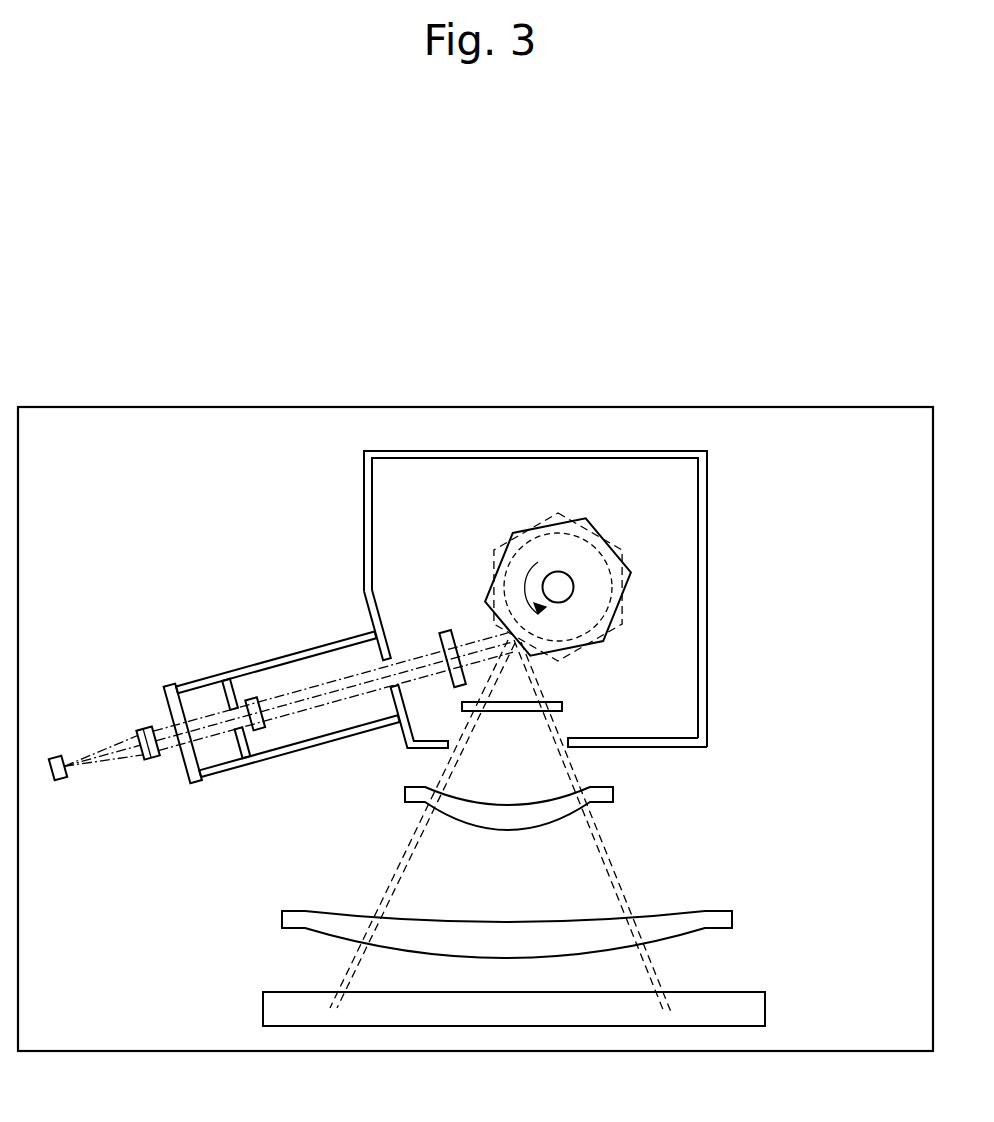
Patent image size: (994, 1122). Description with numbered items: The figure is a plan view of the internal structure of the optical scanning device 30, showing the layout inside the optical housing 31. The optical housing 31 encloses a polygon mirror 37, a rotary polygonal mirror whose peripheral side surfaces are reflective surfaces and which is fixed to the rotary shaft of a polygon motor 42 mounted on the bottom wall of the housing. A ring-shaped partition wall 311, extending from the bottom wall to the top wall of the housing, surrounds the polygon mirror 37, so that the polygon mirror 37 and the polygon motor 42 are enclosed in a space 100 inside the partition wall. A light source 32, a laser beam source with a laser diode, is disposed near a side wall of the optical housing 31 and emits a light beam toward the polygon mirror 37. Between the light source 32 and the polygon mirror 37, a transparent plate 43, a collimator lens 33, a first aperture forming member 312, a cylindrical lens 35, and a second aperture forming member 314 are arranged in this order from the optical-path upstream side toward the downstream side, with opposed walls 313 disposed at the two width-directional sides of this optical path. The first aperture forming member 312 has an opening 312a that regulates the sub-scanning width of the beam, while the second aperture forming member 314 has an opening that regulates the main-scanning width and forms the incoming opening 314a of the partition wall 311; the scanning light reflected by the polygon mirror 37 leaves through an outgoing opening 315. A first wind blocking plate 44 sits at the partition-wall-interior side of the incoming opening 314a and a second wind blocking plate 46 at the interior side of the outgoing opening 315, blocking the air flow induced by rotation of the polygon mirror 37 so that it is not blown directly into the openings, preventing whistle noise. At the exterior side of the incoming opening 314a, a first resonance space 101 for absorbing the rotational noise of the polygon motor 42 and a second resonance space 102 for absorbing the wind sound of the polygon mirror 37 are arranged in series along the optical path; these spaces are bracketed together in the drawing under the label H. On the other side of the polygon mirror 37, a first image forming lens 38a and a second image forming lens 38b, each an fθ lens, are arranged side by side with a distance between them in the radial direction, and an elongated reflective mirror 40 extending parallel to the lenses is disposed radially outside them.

The optical scanning device 30 is at (143, 406).
The optical housing 31 is at (195, 405).
The light source 32 is at (58, 784).
The collimator lens 33 is at (150, 762).
The cylindrical lens 35 is at (253, 731).
The polygon mirror 37 is at (527, 520).
The first image forming lens 38a is at (550, 829).
The second image forming lens 38b is at (680, 943).
The reflective mirror 40 is at (766, 1006).
The polygon motor 42 is at (616, 546).
The transparent plate 43 is at (163, 712).
The first wind blocking plate 44 is at (451, 632).
The second wind blocking plate 46 is at (527, 714).
The space 100 is at (440, 480).
The first resonance space 101 is at (300, 677).
The second resonance space 102 is at (205, 693).
The ring-shaped partition wall 311 is at (362, 507).
The first aperture forming member 312 is at (238, 752).
The opening 312a is at (228, 737).
The opposed walls 313 is at (317, 747).
The second aperture forming member 314 is at (392, 702).
The incoming opening 314a is at (388, 665).
The outgoing opening 315 is at (562, 741).
The light source unit H is at (132, 547).